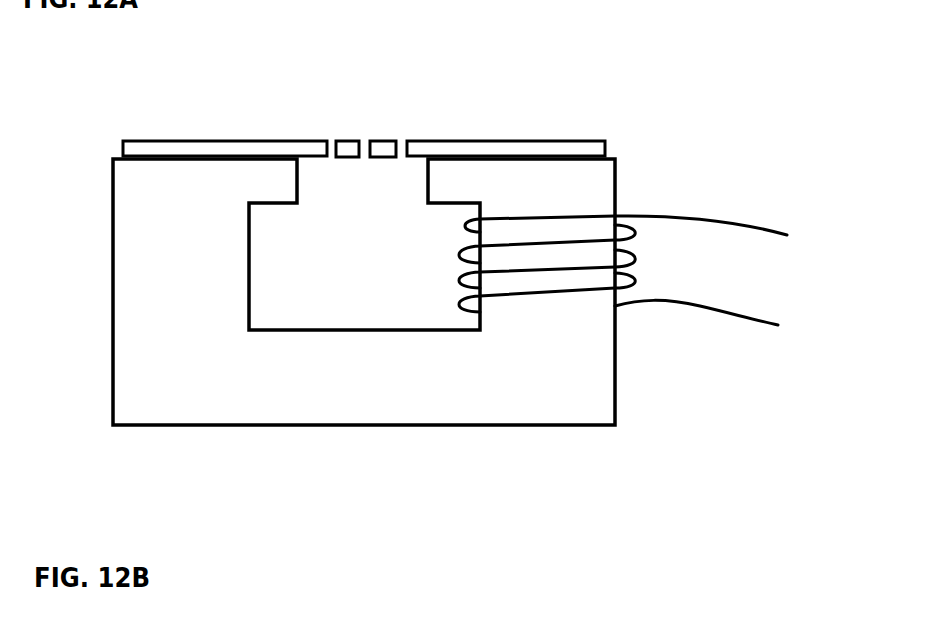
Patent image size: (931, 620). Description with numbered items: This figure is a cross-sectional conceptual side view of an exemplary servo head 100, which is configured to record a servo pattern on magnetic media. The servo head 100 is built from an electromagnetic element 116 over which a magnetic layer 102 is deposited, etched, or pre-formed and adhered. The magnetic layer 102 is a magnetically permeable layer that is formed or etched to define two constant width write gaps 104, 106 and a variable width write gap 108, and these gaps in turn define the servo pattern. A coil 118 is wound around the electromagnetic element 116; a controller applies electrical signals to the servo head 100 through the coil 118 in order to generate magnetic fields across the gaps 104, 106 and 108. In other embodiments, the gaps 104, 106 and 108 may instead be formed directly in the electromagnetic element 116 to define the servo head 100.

The servo head 100 is at (454, 264).
The magnetic layer 102 is at (200, 138).
The constant width write gap 104 is at (331, 122).
The constant width write gap 106 is at (368, 122).
The variable width write gap 108 is at (403, 124).
The electromagnetic element 116 is at (383, 380).
The coil 118 is at (645, 240).